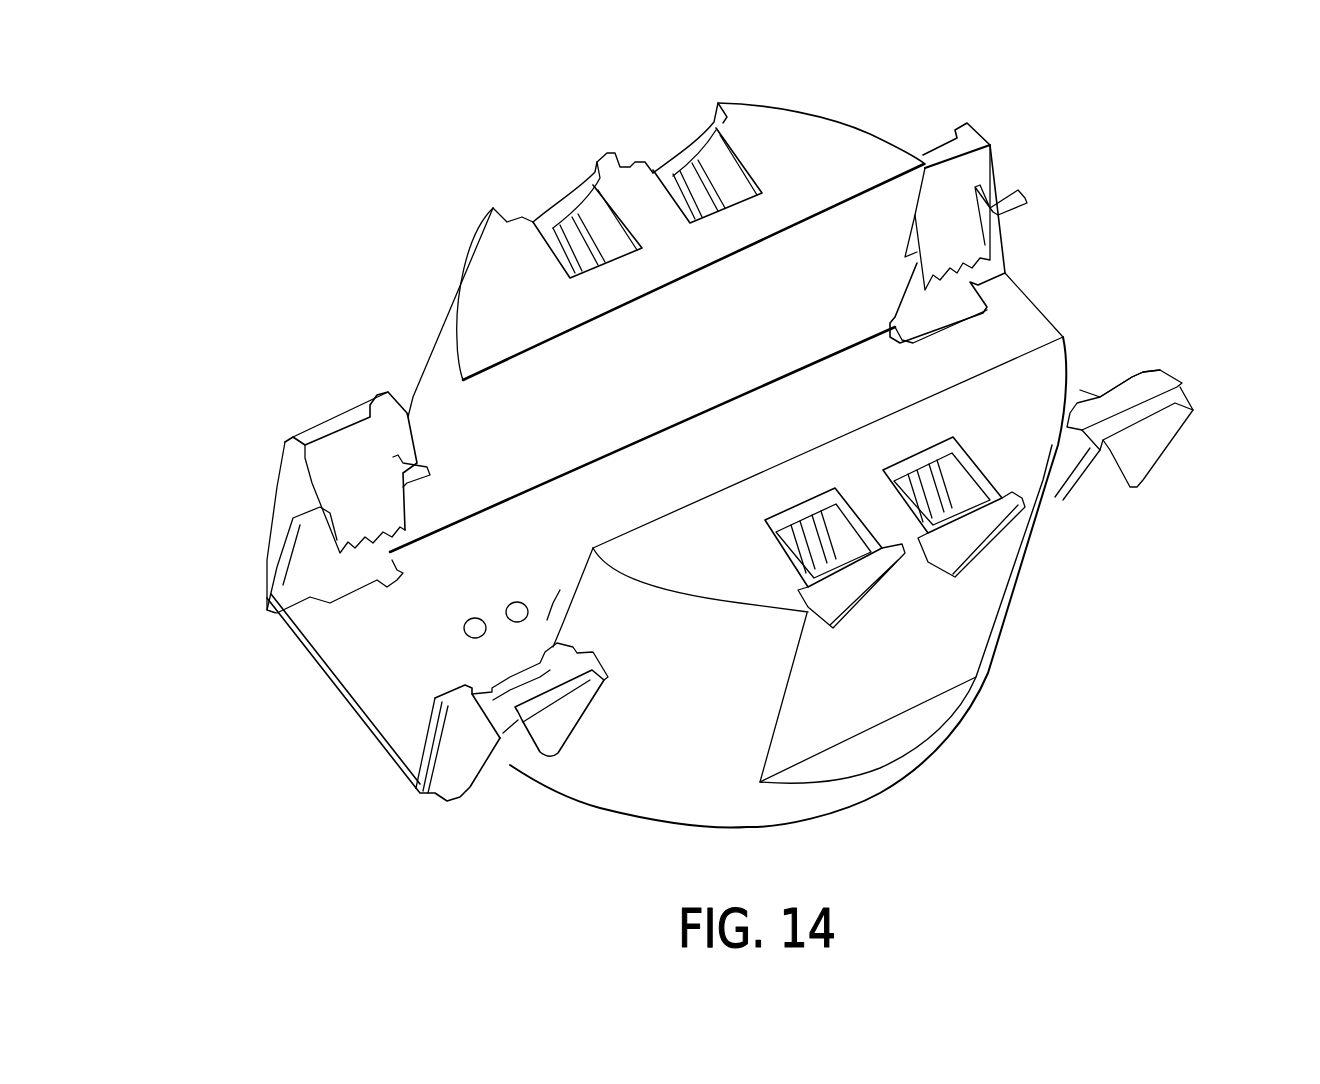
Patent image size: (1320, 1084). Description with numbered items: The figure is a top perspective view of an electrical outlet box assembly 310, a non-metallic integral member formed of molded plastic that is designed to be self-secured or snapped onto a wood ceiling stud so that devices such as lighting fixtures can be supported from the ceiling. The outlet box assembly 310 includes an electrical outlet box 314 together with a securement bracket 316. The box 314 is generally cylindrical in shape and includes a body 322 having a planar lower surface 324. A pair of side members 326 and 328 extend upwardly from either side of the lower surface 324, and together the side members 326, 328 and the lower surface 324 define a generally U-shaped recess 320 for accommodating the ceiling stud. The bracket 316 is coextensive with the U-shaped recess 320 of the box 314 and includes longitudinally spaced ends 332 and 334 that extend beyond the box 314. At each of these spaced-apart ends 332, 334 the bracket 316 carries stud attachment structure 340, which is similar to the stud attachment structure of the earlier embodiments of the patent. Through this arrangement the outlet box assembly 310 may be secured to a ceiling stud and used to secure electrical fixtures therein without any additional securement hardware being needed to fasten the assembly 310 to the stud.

The electrical outlet box assembly 310 is at (718, 466).
The electrical outlet box 314 is at (1017, 594).
The securement bracket 316 is at (1080, 390).
The U-shaped recess 320 is at (713, 463).
The body 322 is at (797, 130).
The planar lower surface 324 is at (442, 590).
The side member 326 is at (852, 233).
The side member 328 is at (575, 597).
The end 332 is at (390, 697).
The end 334 is at (1010, 325).
The stud attachment structure 340 is at (1103, 400).